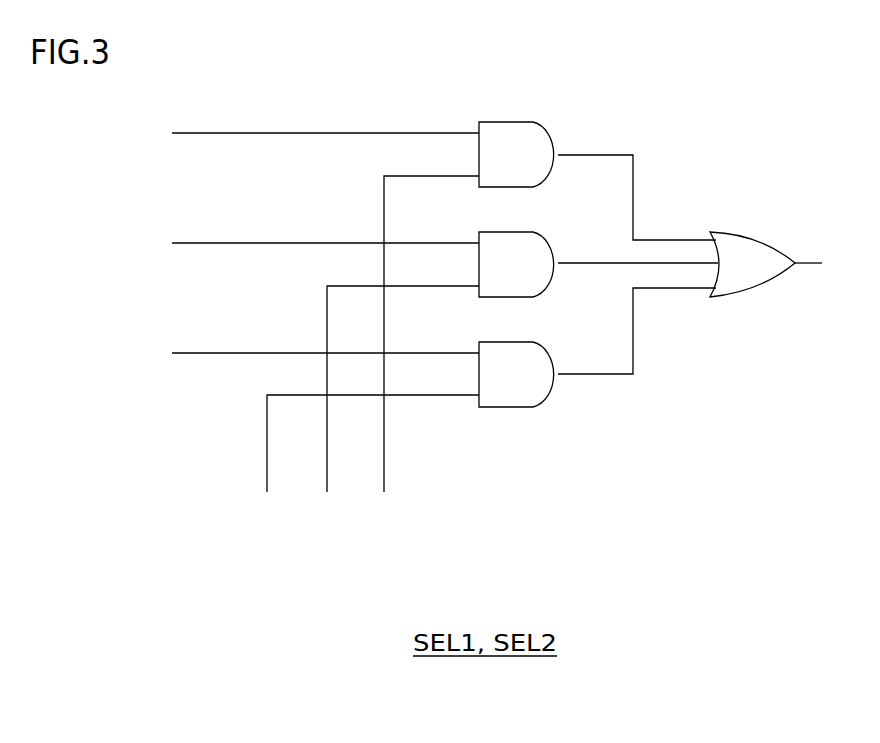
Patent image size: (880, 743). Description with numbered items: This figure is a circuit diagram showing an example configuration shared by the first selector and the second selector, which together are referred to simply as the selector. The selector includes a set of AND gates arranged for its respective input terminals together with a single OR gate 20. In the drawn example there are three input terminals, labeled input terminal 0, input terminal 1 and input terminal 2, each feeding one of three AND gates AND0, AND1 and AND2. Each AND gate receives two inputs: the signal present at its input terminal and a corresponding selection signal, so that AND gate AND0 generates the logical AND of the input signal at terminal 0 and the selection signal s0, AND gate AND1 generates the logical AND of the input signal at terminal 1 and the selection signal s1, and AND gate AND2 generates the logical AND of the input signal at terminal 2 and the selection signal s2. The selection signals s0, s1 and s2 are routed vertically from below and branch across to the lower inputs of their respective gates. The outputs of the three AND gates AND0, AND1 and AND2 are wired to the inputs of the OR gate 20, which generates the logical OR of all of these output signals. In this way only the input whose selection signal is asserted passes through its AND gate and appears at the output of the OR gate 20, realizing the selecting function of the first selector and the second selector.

The input terminal 2 is at (314, 134).
The input terminal 1 is at (315, 243).
The input terminal 0 is at (314, 353).
The selection signal s2 is at (427, 347).
The selection signal s1 is at (398, 402).
The selection signal s0 is at (368, 456).
The AND gate AND2 is at (508, 122).
The AND gate AND1 is at (508, 232).
The AND gate AND0 is at (508, 342).
The OR gate 20 is at (745, 232).